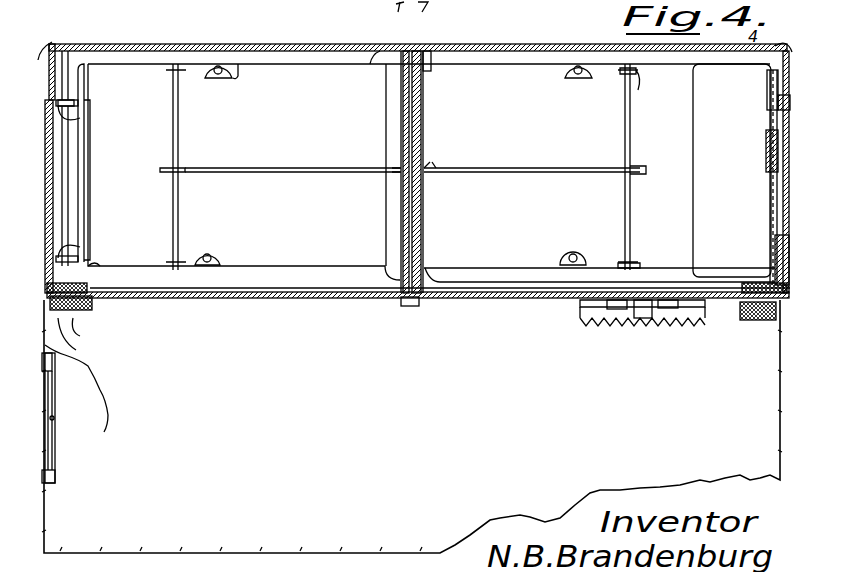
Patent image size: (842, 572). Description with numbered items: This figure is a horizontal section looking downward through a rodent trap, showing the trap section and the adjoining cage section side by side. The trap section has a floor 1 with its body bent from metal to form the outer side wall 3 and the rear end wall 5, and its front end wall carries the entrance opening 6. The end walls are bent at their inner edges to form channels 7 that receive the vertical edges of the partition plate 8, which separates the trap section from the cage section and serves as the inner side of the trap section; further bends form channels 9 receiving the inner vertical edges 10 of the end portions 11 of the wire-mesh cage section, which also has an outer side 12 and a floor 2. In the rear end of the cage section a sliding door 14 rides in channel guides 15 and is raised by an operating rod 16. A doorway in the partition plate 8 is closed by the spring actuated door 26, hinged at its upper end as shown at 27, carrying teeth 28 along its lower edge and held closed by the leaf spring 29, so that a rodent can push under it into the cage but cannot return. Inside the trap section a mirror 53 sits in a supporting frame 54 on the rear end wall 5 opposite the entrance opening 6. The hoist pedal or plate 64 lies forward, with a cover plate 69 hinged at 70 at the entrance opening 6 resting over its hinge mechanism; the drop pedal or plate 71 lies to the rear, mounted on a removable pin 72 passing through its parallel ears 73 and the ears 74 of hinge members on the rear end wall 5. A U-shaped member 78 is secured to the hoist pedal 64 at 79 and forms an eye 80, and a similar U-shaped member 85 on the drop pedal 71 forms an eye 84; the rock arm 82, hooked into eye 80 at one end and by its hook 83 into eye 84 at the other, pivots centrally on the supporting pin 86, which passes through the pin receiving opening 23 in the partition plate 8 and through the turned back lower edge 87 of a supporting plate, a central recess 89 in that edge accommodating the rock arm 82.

The floor of the trap section 1 is at (284, 302).
The floor of the cage section 2 is at (557, 412).
The outer side wall 3 is at (270, 45).
The rear end wall 5 is at (38, 58).
The entrance opening 6 is at (775, 238).
The runways or channels 7 is at (72, 293).
The partition plate 8 is at (220, 302).
The channels 9 is at (745, 318).
The inner vertical edges 10 is at (762, 320).
The end portions of the cage section 11 is at (778, 390).
The outer side of the cage section 12 is at (282, 548).
The sliding door 14 is at (54, 450).
The channel guides 15 is at (58, 486).
The operating rod 16 is at (54, 416).
The pin receiving opening 23 is at (408, 306).
The spring actuated door 26 is at (595, 312).
The hinge of the door 27 is at (657, 318).
The teeth 28 is at (600, 324).
The leaf spring 29 is at (650, 312).
The mirror 53 is at (60, 140).
The supporting frame 54 is at (78, 126).
The hoist pedal or plate 64 is at (548, 165).
The cover plate 69 is at (732, 170).
The hinge of the cover plate 70 is at (770, 180).
The drop pedal or plate 71 is at (222, 165).
The removable pin 72 is at (70, 58).
The parallel ears 73 is at (90, 225).
The ears of the hinge members 74 is at (80, 110).
The U-shaped member 78 is at (624, 120).
The securing points of the U-shaped member 79 is at (632, 266).
The eye 80 is at (625, 180).
The rock arm 82 is at (330, 180).
The hook 83 is at (166, 168).
The eye 84 is at (180, 168).
The U-shaped member 85 is at (180, 134).
The supporting pin 86 is at (411, 102).
The turned back lower edge 87 is at (424, 130).
The central recess 89 is at (428, 165).